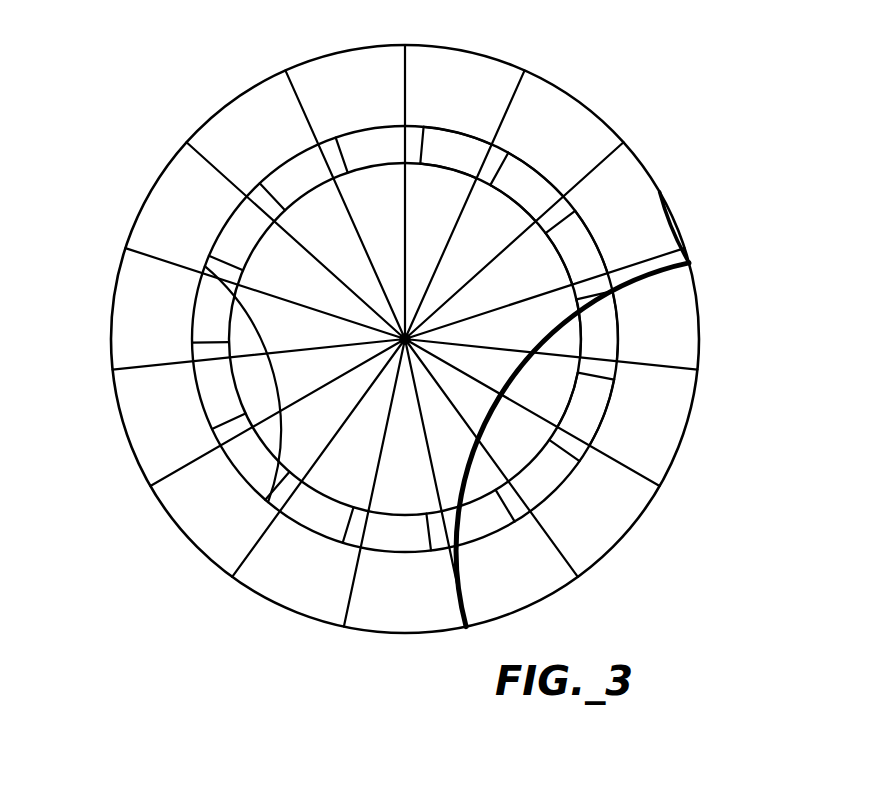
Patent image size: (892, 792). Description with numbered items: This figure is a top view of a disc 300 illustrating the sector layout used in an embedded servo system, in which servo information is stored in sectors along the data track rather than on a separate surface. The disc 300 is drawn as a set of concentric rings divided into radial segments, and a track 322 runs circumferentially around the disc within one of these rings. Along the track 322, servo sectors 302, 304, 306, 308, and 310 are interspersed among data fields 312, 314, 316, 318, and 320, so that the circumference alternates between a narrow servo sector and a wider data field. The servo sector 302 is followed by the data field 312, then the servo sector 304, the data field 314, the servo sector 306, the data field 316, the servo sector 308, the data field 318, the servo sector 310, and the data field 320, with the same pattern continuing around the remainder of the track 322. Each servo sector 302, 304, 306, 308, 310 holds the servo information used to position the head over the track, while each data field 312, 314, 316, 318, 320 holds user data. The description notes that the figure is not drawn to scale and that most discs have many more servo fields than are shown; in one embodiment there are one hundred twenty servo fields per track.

The disc 300 is at (188, 85).
The servo sector 302 is at (412, 137).
The data field 312 is at (447, 146).
The servo sector 304 is at (498, 150).
The data field 314 is at (527, 187).
The servo sector 306 is at (555, 213).
The data field 316 is at (580, 255).
The servo sector 308 is at (590, 290).
The data field 318 is at (610, 342).
The servo sector 310 is at (608, 368).
The data field 320 is at (592, 405).
The track 322 is at (195, 392).